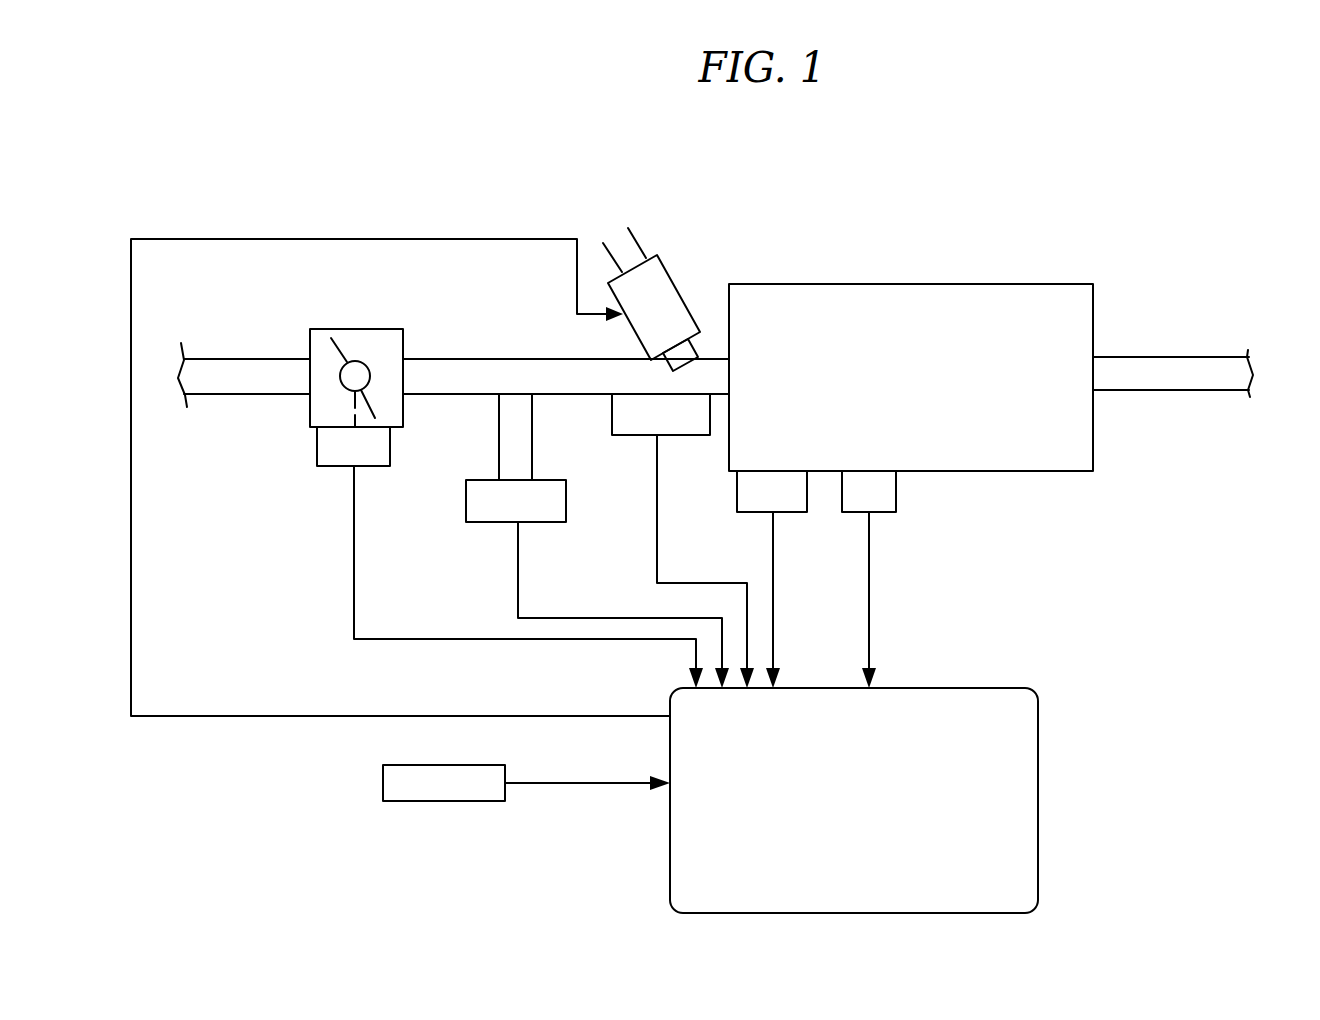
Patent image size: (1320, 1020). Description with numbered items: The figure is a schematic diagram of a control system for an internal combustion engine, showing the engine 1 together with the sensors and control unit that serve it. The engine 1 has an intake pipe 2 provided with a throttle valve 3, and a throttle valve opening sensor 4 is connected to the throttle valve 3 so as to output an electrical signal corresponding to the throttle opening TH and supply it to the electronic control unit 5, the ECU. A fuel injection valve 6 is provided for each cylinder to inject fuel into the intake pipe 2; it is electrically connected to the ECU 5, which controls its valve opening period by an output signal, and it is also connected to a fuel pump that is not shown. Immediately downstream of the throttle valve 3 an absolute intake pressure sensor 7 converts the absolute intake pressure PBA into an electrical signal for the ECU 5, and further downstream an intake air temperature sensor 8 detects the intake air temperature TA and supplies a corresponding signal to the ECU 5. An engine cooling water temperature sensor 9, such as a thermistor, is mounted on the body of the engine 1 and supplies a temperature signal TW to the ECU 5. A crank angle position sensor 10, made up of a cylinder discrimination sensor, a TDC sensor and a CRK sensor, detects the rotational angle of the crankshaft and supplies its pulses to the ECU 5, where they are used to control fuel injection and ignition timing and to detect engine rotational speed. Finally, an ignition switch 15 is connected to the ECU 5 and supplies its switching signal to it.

The engine 1 is at (815, 284).
The intake pipe 2 is at (438, 359).
The throttle valve 3 is at (331, 338).
The throttle valve opening sensor 4 is at (375, 466).
The electronic control unit 5 is at (950, 688).
The fuel injection valve 6 is at (677, 282).
The absolute intake pressure sensor 7 is at (546, 522).
The intake air temperature sensor 8 is at (688, 435).
The engine cooling water temperature sensor 9 is at (793, 512).
The crank angle position sensor 10 is at (883, 512).
The ignition switch 15 is at (383, 783).